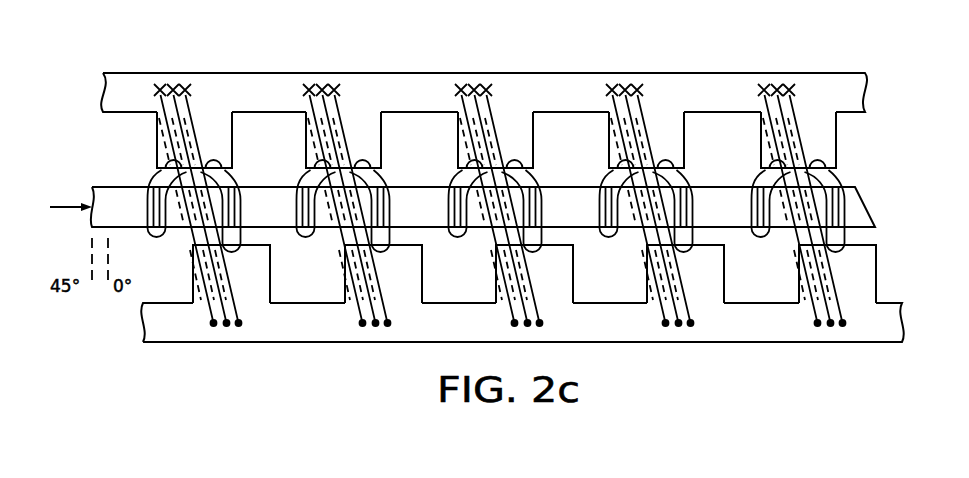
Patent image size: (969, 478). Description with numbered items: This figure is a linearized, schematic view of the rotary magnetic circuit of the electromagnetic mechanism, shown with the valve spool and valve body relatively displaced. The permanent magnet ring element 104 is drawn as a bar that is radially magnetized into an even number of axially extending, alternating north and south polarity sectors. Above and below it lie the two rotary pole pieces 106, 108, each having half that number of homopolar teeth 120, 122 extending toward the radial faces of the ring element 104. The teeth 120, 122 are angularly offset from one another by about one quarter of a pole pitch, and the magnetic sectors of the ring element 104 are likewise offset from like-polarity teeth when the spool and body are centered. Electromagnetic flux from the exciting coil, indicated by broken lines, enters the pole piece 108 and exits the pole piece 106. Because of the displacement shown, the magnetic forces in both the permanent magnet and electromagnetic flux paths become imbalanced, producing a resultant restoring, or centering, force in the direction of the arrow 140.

The permanent magnet ring element 104 is at (857, 200).
The rotary pole piece 106 is at (658, 88).
The rotary pole piece 108 is at (779, 322).
The homopolar teeth 120 is at (233, 143).
The homopolar teeth 122 is at (343, 285).
The arrow 140 is at (63, 205).